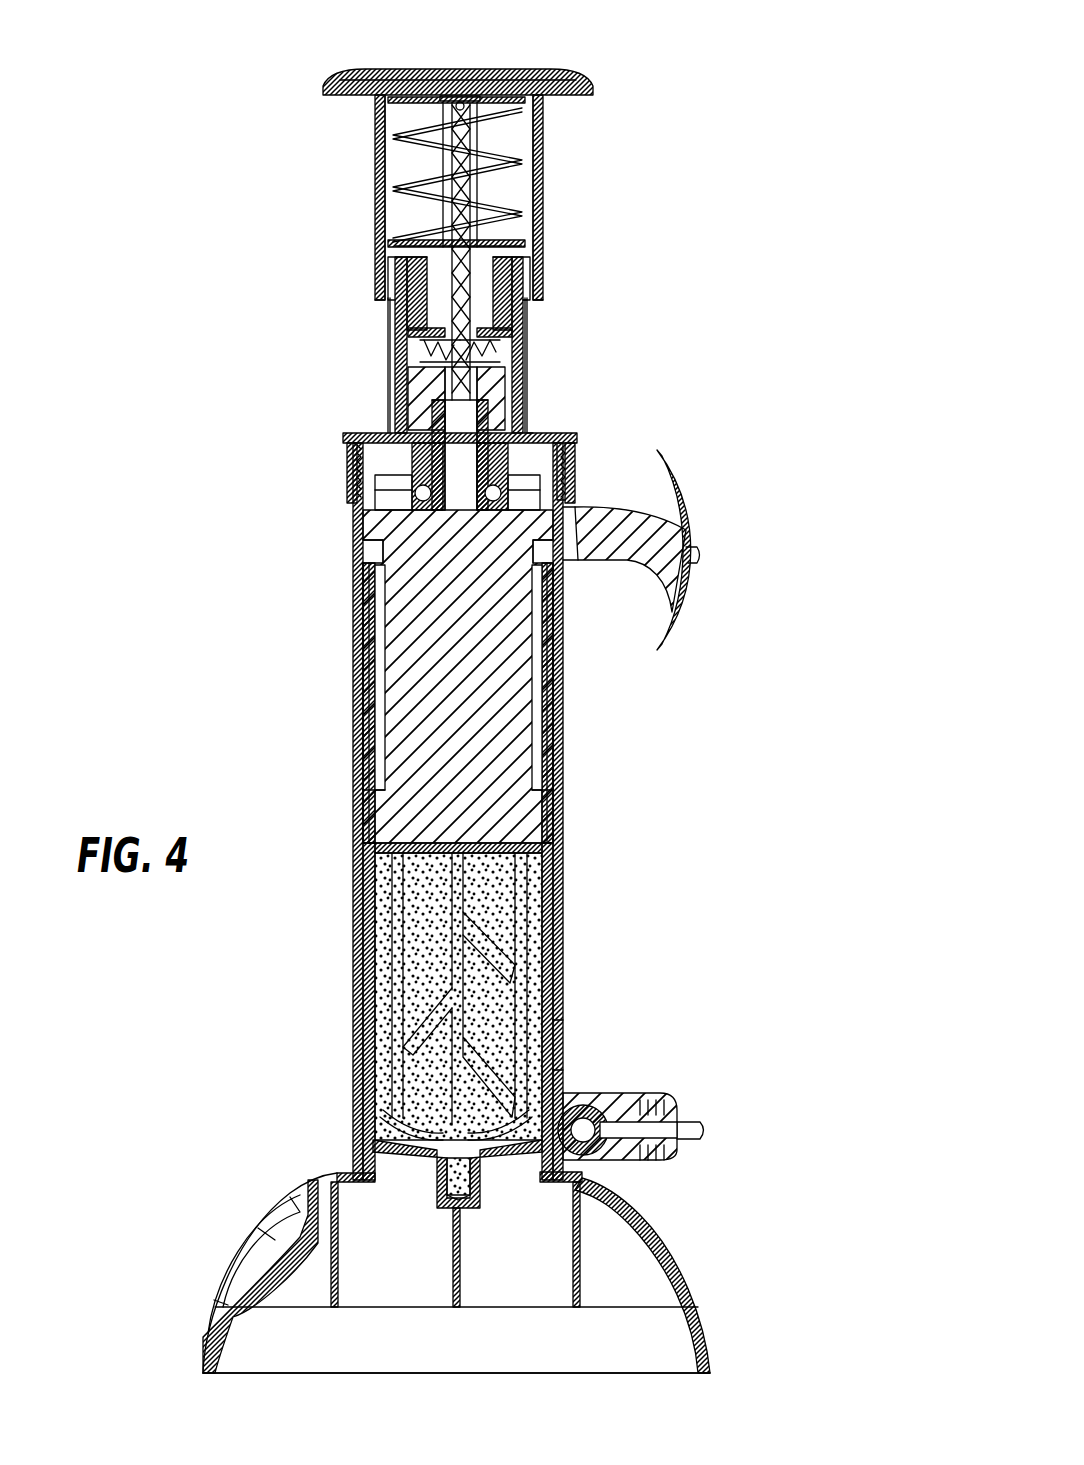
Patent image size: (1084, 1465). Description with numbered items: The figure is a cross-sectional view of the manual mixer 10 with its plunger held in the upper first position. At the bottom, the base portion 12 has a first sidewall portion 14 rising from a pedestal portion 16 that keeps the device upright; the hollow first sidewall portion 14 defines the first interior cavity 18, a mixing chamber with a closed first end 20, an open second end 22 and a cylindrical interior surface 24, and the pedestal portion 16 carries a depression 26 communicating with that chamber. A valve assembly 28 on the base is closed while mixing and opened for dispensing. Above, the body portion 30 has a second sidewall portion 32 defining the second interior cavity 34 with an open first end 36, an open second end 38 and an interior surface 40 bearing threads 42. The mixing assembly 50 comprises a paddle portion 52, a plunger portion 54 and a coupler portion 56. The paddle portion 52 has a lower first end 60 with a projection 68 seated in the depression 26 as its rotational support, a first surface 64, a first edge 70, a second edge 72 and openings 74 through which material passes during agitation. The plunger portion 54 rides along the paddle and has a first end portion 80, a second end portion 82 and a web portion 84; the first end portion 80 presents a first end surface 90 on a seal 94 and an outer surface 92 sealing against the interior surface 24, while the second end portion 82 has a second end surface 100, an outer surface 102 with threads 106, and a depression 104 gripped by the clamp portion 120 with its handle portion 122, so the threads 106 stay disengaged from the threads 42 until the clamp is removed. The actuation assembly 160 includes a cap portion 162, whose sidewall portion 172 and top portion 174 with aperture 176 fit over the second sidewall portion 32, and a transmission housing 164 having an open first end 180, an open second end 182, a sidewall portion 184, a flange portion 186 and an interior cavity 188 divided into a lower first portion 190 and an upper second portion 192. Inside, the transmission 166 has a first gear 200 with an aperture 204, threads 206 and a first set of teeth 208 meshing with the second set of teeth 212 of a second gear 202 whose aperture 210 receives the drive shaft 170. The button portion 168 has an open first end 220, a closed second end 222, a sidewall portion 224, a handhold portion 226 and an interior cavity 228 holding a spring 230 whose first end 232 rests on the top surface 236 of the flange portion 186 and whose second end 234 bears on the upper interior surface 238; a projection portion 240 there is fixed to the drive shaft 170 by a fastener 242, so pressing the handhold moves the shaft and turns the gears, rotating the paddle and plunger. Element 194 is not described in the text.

The manual mixer 10 is at (792, 827).
The base portion 12 is at (722, 1333).
The first sidewall portion 14 is at (545, 1085).
The pedestal portion 16 is at (695, 1278).
The first interior cavity 18 is at (560, 1066).
The closed first end 20 is at (385, 1066).
The open second end 22 is at (520, 860).
The interior surface 24 is at (525, 965).
The depression 26 is at (480, 1193).
The valve assembly 28 is at (655, 1165).
The body portion 30 is at (576, 785).
The second sidewall portion 32 is at (563, 760).
The second interior cavity 34 is at (385, 670).
The open first end 36 is at (385, 1097).
The open second end 38 is at (573, 447).
The interior surface 40 is at (575, 508).
The threads 42 is at (553, 660).
The mixing assembly 50 is at (553, 713).
The paddle portion 52 is at (545, 1045).
The plunger portion 54 is at (518, 813).
The coupler portion 56 is at (352, 471).
The lower first end 60 is at (362, 1176).
The first surface 64 is at (550, 1003).
The projection 68 is at (457, 1160).
The first edge 70 is at (523, 918).
The second edge 72 is at (392, 985).
The openings 74 is at (400, 1012).
The first end portion 80 is at (356, 827).
The second end portion 82 is at (575, 540).
The web portion 84 is at (415, 698).
The first end surface 90 is at (376, 878).
The outer surface 92 is at (370, 802).
The seal 94 is at (378, 903).
The second end surface 100 is at (356, 490).
The outer surface 102 is at (362, 522).
The depression 104 is at (353, 565).
The threads 106 is at (353, 540).
The clamp portion 120 is at (682, 628).
The handle portion 122 is at (673, 578).
The actuation assembly 160 is at (560, 278).
The cap portion 162 is at (577, 470).
The transmission housing 164 is at (382, 382).
The transmission 166 is at (535, 360).
The button portion 168 is at (556, 126).
The drive shaft 170 is at (520, 287).
The sidewall portion 172 is at (640, 541).
The top portion 174 is at (365, 436).
The aperture 176 is at (348, 458).
The open first end 180 is at (425, 403).
The open second end 182 is at (396, 238).
The sidewall portion 184 is at (408, 275).
The flange portion 186 is at (392, 265).
The interior cavity 188 is at (508, 318).
The lower first portion 190 is at (406, 366).
The upper second portion 192 is at (402, 281).
The spring seat edge 194 is at (500, 188).
The first gear 200 is at (475, 378).
The second gear 202 is at (406, 346).
The aperture 204 is at (495, 392).
The threads 206 is at (445, 410).
The first set of teeth 208 is at (490, 378).
The aperture 210 is at (406, 328).
The second set of teeth 212 is at (527, 340).
The open first end 220 is at (520, 302).
The closed second end 222 is at (540, 80).
The sidewall portion 224 is at (545, 175).
The handhold portion 226 is at (505, 82).
The interior cavity 228 is at (540, 154).
The spring 230 is at (370, 155).
The first end 232 is at (425, 179).
The second end 234 is at (398, 102).
The top surface 236 is at (512, 240).
The upper interior surface 238 is at (477, 105).
The projection portion 240 is at (445, 96).
The fastener 242 is at (460, 102).